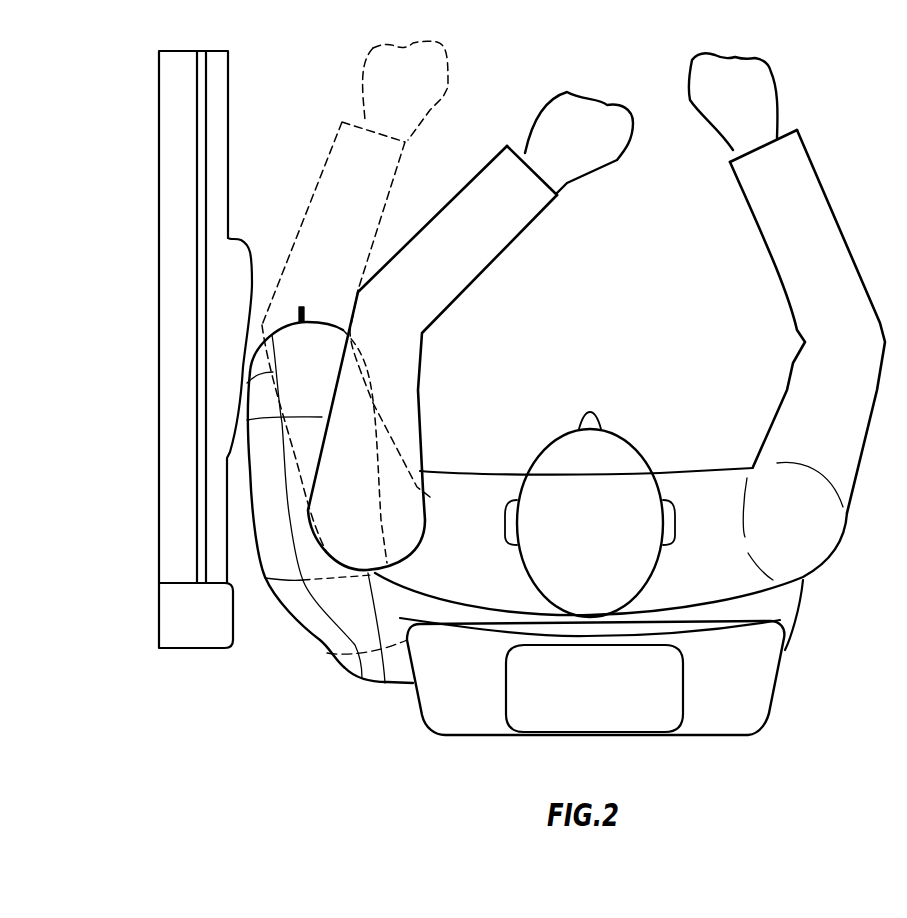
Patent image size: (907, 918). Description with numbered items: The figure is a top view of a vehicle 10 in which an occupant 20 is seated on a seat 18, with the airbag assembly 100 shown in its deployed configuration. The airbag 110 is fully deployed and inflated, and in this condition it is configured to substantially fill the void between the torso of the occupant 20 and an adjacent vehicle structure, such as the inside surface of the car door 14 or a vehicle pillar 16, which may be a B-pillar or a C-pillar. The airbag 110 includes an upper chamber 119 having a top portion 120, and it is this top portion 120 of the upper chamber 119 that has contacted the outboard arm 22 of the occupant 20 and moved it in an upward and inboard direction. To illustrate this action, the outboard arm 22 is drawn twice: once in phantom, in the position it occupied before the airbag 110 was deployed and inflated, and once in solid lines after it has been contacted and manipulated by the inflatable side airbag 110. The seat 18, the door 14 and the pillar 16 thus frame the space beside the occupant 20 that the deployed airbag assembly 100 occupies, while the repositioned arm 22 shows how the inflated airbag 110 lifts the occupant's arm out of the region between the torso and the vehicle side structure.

The vehicle 10 is at (196, 355).
The car door 14 is at (218, 132).
The vehicle pillar 16 is at (187, 627).
The seat 18 is at (450, 703).
The occupant 20 is at (722, 554).
The outboard arm 22 is at (448, 260).
The airbag assembly 100 is at (245, 428).
The airbag 110 is at (245, 514).
The upper chamber 119 is at (232, 418).
The top portion 120 is at (295, 500).